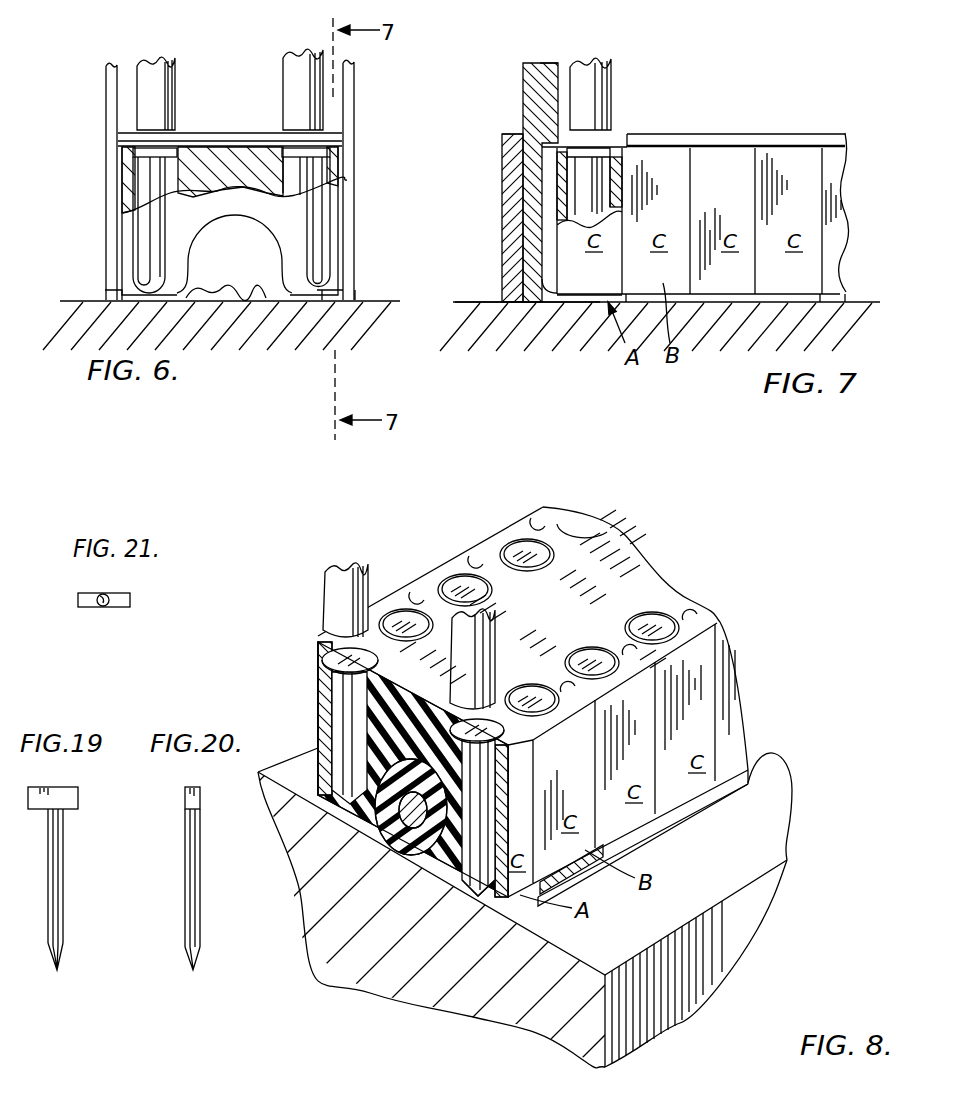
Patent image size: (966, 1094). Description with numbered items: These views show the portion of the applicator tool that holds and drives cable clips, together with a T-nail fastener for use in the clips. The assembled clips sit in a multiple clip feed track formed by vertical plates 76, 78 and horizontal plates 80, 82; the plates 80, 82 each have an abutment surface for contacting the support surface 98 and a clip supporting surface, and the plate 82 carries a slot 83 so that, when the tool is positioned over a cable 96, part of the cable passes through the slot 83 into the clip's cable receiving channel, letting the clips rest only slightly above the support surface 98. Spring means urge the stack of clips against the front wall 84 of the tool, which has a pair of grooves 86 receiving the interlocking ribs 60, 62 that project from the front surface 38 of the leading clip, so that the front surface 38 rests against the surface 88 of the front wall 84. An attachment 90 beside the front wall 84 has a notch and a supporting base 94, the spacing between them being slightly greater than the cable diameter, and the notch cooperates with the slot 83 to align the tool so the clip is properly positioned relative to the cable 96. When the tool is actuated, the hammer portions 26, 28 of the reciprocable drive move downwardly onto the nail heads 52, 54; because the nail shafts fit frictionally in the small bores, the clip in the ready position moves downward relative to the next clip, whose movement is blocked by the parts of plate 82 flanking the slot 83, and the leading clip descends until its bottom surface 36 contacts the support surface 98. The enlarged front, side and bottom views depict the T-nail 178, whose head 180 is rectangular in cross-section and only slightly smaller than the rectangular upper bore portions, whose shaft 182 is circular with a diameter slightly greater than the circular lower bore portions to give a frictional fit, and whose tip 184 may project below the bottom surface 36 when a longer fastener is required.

In FIG. 6, the hammer portion 26 is at (177, 88).
In FIG. 8, the hammer portion 26 is at (328, 600).
In FIG. 6, the hammer portion 28 is at (288, 95).
In FIG. 7, the hammer portion 28 is at (612, 85).
In FIG. 8, the hammer portion 28 is at (488, 640).
In FIG. 7, the bottom surface 36 is at (587, 297).
In FIG. 8, the bottom surface 36 is at (492, 885).
In FIG. 7, the front surface 38 is at (558, 292).
In FIG. 8, the head 52 is at (337, 660).
In FIG. 8, the head 54 is at (495, 738).
In FIG. 6, the interlocking rib 60 is at (142, 264).
In FIG. 6, the interlocking rib 62 is at (317, 262).
In FIG. 7, the interlocking rib 62 is at (556, 258).
In FIG. 6, the vertical plate 76 is at (108, 258).
In FIG. 6, the vertical plate 78 is at (355, 227).
In FIG. 6, the horizontal plate 80 is at (330, 143).
In FIG. 7, the horizontal plate 80 is at (712, 133).
In FIG. 6, the horizontal plate 82 is at (120, 290).
In FIG. 7, the horizontal plate 82 is at (835, 299).
In FIG. 8, the horizontal plate 82 is at (695, 800).
In FIG. 6, the slot 83 is at (226, 288).
In FIG. 7, the front wall 84 is at (525, 97).
In FIG. 7, the grooves 86 is at (545, 172).
In FIG. 7, the surface 88 is at (558, 70).
In FIG. 7, the attachment 90 is at (502, 217).
In FIG. 7, the supporting base 94 is at (502, 304).
In FIG. 8, the cable 96 is at (385, 850).
In FIG. 7, the support surface 98 is at (463, 301).
In FIG. 8, the support surface 98 is at (425, 940).
In FIG. 19, the T-nail 178 is at (91, 888).
In FIG. 20, the T-nail 178 is at (228, 888).
In FIG. 19, the head 180 is at (80, 797).
In FIG. 20, the head 180 is at (200, 797).
In FIG. 21, the head 180 is at (130, 600).
In FIG. 19, the shaft 182 is at (62, 853).
In FIG. 20, the shaft 182 is at (200, 853).
In FIG. 21, the shaft 182 is at (102, 606).
In FIG. 19, the tip 184 is at (60, 963).
In FIG. 20, the tip 184 is at (197, 963).